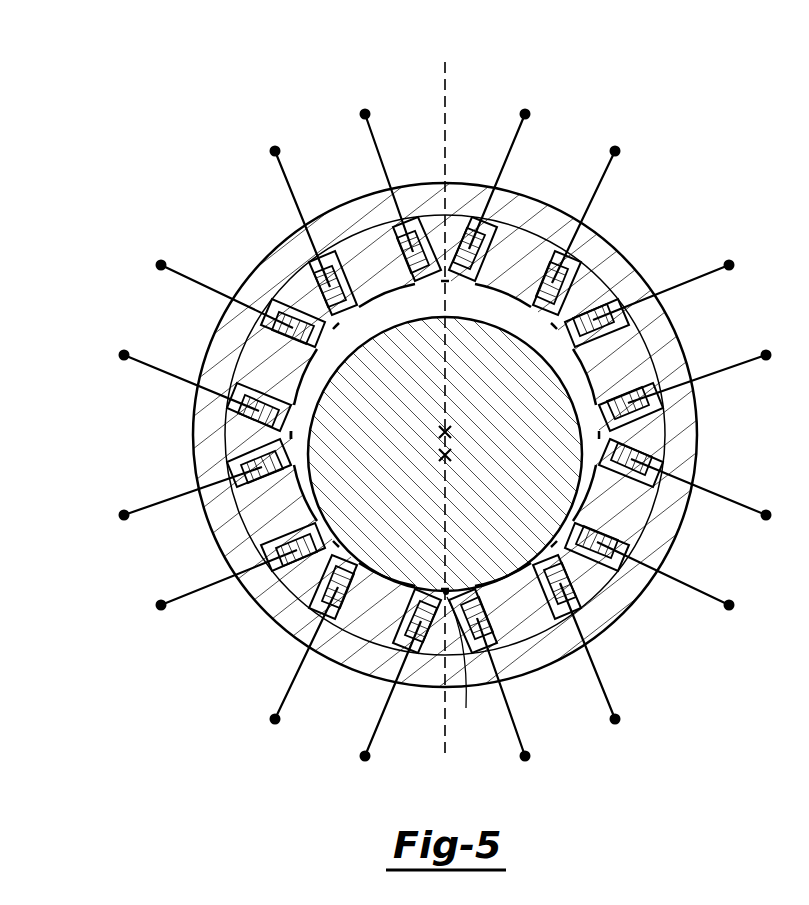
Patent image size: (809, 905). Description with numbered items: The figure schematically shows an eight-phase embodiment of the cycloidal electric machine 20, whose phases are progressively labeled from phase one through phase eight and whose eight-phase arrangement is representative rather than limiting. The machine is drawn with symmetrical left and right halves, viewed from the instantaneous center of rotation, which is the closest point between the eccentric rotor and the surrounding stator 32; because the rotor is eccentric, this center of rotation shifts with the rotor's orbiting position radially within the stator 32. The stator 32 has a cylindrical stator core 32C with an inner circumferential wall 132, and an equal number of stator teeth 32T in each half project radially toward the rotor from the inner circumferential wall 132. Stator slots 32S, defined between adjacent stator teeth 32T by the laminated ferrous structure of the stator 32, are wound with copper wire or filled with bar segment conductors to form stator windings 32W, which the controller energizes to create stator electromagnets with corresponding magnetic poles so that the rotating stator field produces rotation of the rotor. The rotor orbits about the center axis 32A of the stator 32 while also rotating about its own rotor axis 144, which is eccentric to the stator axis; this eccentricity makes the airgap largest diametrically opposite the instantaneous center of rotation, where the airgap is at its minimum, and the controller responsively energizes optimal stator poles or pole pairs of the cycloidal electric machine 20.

The cycloidal electric machine 20 is at (447, 407).
The stator 32 is at (479, 454).
The stator core 32C is at (613, 613).
The stator teeth 32T is at (625, 357).
The stator slots 32S is at (306, 576).
The stator windings 32W is at (632, 406).
The center axis of the stator 32A is at (449, 428).
The rotor axis 144 is at (450, 460).
The inner circumferential wall 132 is at (238, 448).